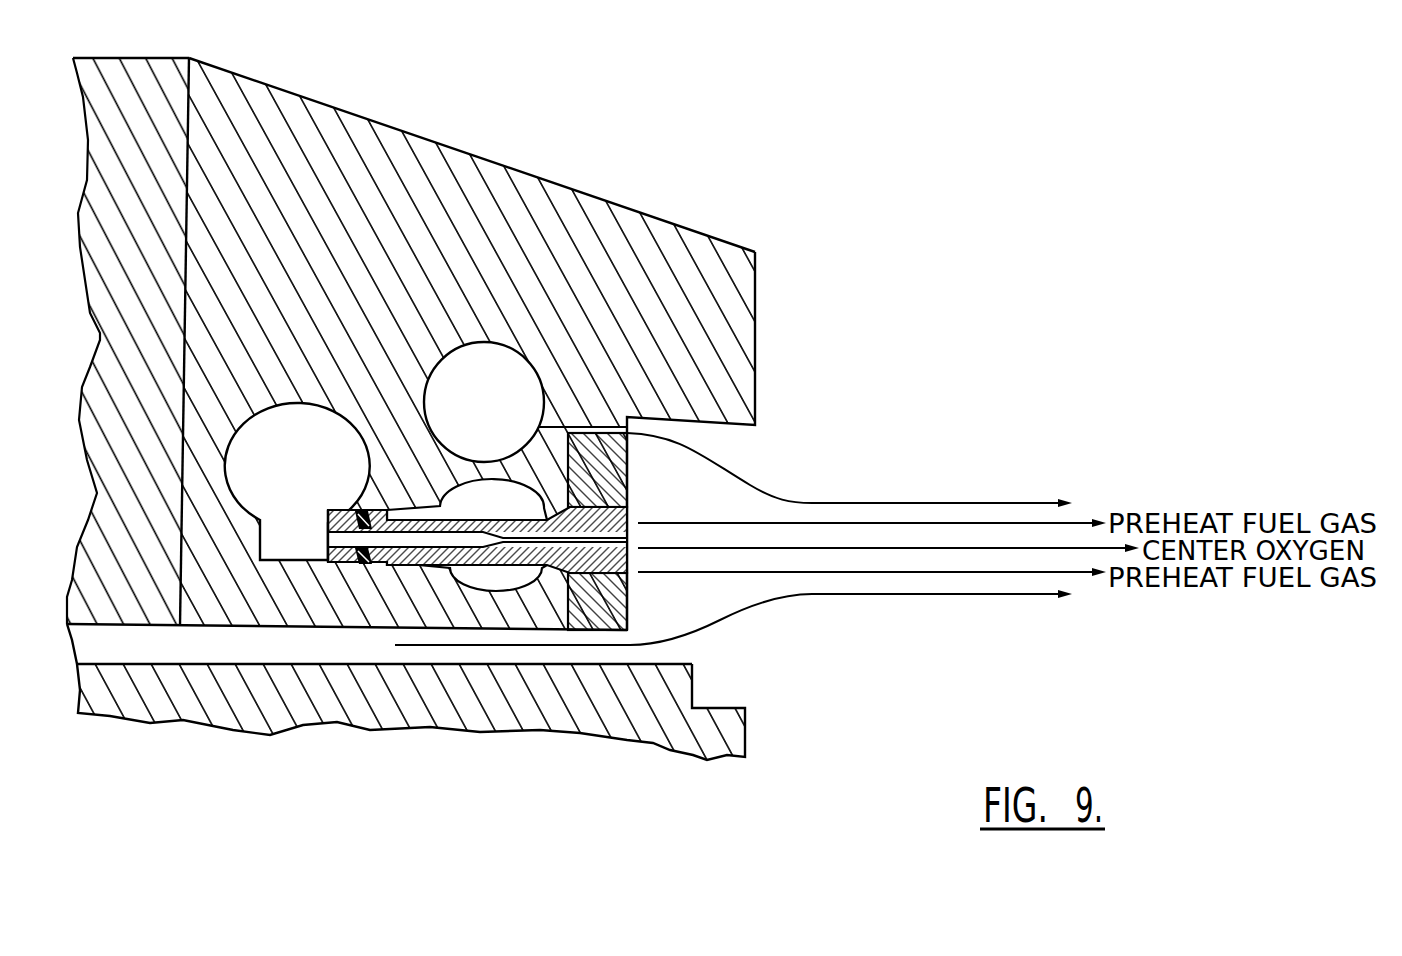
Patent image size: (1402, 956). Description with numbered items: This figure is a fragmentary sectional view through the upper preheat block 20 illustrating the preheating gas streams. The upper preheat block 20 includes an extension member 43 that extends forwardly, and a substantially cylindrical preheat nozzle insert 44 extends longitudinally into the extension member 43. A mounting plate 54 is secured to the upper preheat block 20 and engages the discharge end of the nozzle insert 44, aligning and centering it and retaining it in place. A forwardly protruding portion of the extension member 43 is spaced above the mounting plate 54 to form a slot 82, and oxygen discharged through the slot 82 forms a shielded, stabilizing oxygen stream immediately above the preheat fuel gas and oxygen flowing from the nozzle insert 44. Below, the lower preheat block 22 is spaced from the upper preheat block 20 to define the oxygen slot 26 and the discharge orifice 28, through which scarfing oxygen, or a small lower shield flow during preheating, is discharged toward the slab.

The upper preheat block 20 is at (525, 165).
The extension member 43 is at (683, 227).
The slot 82 is at (640, 435).
The mounting plate 54 is at (627, 476).
The preheat nozzle insert 44 is at (627, 563).
The lower preheat block 22 is at (770, 722).
The oxygen slot 26 is at (322, 654).
The discharge orifice 28 is at (638, 657).